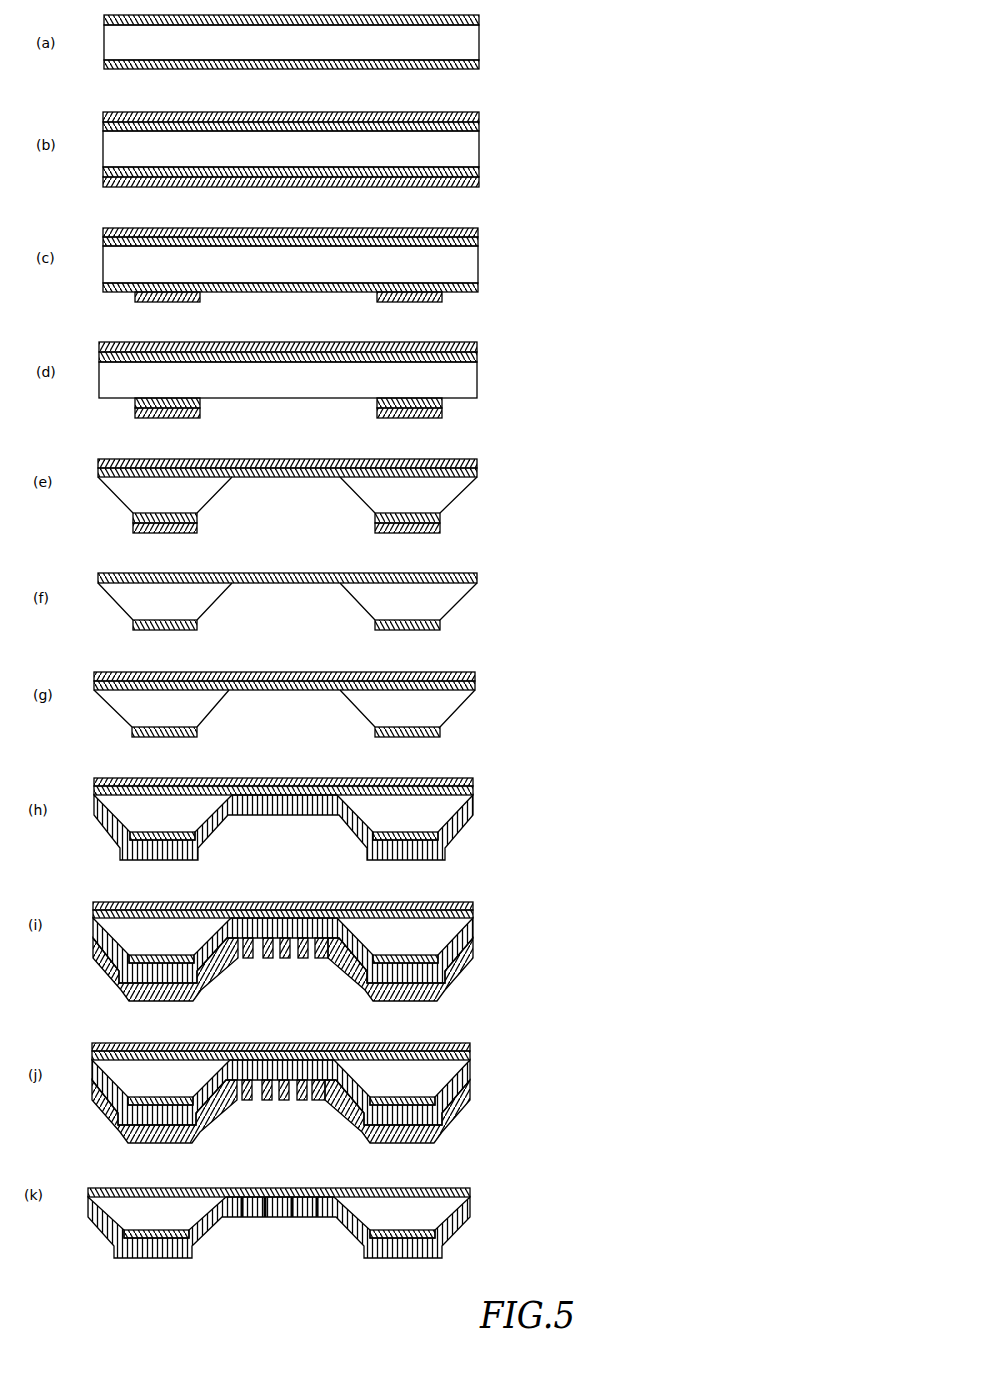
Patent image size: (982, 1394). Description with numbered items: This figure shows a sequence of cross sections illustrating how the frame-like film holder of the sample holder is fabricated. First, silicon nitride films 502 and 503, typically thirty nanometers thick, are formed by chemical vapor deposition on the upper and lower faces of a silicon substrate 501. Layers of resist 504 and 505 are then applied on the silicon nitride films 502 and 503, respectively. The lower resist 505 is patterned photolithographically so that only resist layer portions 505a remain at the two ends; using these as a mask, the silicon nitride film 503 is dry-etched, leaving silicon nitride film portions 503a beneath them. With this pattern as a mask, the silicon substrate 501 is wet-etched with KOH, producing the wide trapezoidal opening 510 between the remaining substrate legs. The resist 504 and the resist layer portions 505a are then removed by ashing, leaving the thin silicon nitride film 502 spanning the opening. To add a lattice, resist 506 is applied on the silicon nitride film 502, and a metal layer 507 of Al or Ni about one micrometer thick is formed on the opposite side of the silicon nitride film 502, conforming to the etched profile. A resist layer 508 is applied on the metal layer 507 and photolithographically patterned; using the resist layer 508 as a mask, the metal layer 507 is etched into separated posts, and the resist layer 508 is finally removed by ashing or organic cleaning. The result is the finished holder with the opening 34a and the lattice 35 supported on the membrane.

The silicon substrate 501 is at (457, 47).
The silicon nitride film 502 is at (479, 17).
The silicon nitride film 503 is at (480, 69).
The resist 504 is at (480, 115).
The resist 505 is at (478, 182).
The resist layer portions 505a is at (442, 298).
The silicon nitride film portions 503a is at (442, 402).
The opening 510 is at (268, 497).
The resist 506 is at (475, 670).
The metal layer 507 is at (450, 828).
The resist layer 508 is at (460, 952).
The opening 34a is at (272, 1238).
The lattice 35 is at (268, 1215).